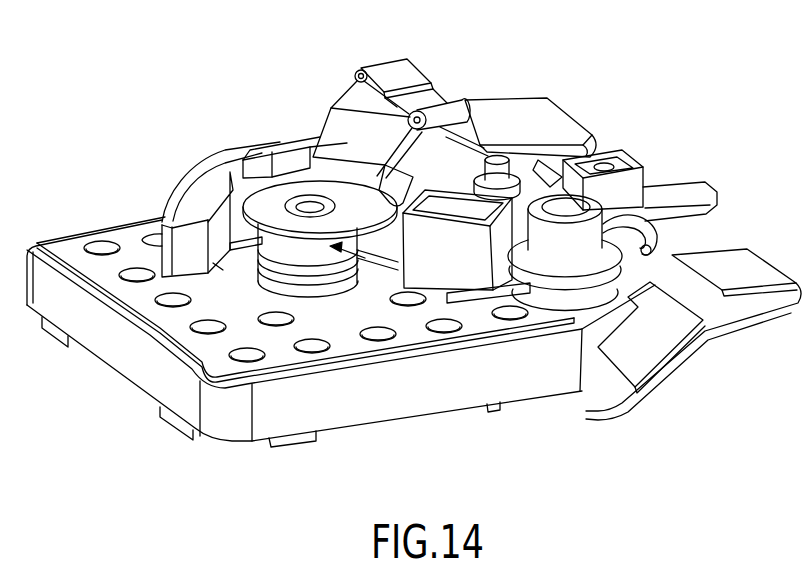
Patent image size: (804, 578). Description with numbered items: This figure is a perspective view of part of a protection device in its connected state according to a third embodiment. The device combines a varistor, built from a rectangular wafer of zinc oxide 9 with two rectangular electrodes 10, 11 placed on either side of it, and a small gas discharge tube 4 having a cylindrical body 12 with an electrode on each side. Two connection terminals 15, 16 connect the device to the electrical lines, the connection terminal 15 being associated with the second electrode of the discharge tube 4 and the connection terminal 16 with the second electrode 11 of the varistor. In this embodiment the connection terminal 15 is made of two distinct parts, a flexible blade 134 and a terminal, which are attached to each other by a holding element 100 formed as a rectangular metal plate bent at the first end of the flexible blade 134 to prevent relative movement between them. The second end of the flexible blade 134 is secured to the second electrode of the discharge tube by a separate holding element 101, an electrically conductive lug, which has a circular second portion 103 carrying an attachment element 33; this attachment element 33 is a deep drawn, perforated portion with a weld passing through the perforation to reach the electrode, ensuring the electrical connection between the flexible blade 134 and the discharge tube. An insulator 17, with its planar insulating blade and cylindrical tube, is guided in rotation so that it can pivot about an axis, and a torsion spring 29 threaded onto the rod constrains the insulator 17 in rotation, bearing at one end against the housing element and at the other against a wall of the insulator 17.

The gas discharge tube 4 is at (350, 242).
The wafer of zinc oxide 9 is at (123, 352).
The electrode 10 is at (65, 247).
The electrode 11 is at (297, 441).
The cylindrical body 12 is at (307, 265).
The connection terminal 15 is at (520, 124).
The connection terminal 16 is at (732, 268).
The insulator 17 is at (277, 152).
The torsion spring 29 is at (647, 228).
The attachment element 33 is at (310, 205).
The holding element 100 is at (392, 68).
The holding element 101 is at (256, 203).
The second portion 103 is at (290, 213).
The flexible blade 134 is at (335, 112).